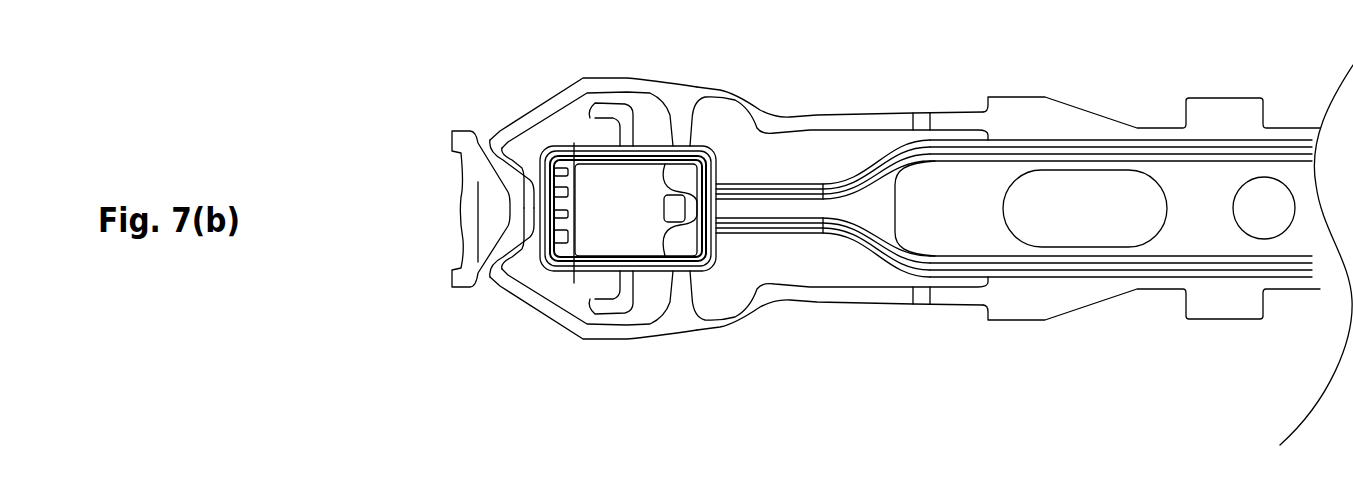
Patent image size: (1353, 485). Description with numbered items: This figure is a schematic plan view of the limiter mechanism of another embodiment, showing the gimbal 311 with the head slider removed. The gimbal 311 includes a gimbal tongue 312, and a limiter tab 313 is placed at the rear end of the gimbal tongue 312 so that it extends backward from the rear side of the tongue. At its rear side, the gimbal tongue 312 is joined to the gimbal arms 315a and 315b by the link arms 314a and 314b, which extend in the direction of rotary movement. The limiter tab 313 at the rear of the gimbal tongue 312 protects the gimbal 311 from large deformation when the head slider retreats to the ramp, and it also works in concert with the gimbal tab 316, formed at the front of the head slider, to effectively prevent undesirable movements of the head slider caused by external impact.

The gimbal 311 is at (1047, 98).
The gimbal tongue 312 is at (570, 260).
The limiter tab 313 is at (718, 210).
The link arm 314a is at (681, 118).
The link arm 314b is at (722, 302).
The gimbal arm 315a is at (666, 82).
The gimbal arm 315b is at (657, 335).
The gimbal tab 316 is at (463, 180).